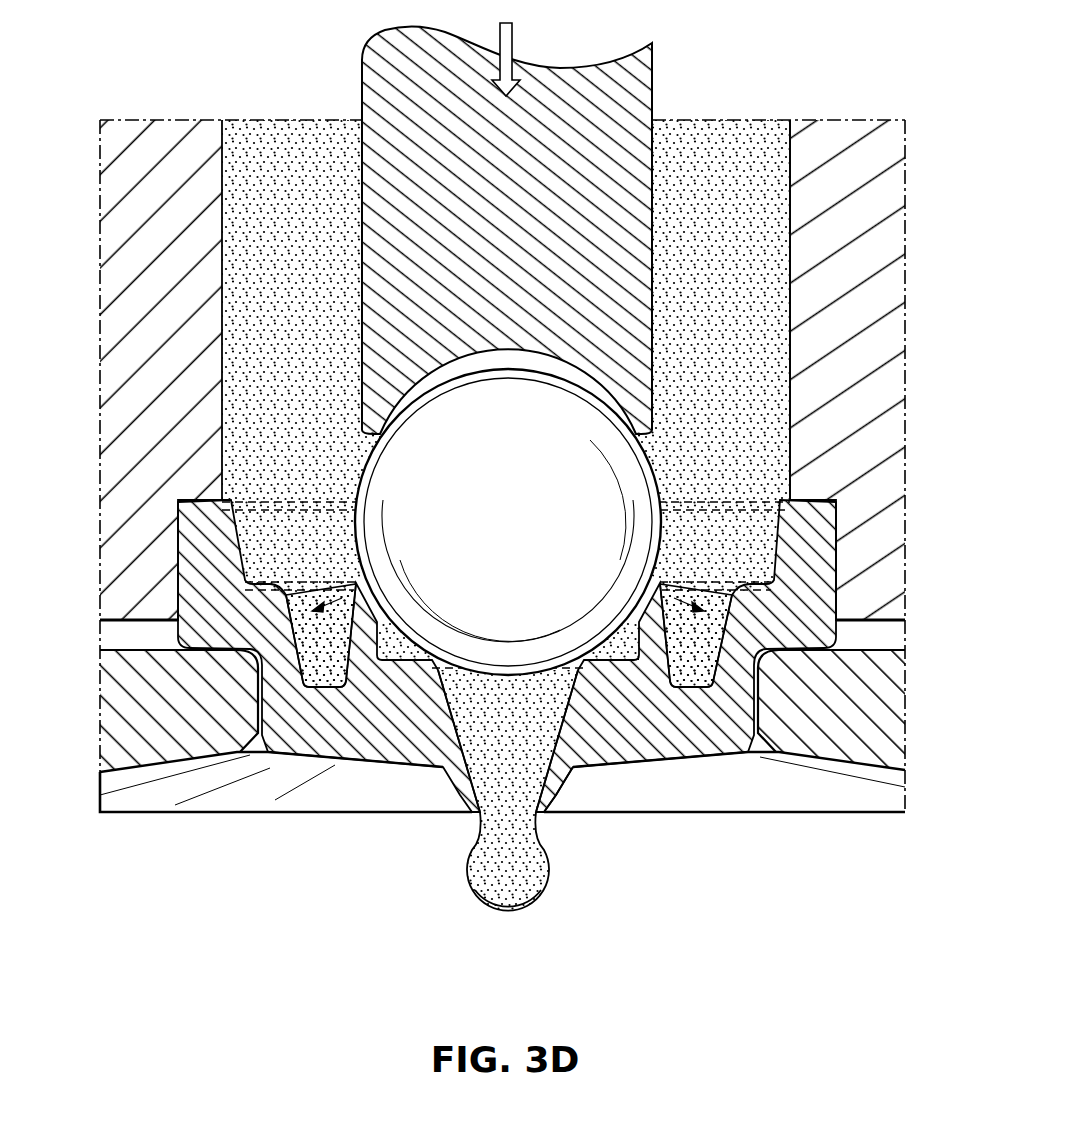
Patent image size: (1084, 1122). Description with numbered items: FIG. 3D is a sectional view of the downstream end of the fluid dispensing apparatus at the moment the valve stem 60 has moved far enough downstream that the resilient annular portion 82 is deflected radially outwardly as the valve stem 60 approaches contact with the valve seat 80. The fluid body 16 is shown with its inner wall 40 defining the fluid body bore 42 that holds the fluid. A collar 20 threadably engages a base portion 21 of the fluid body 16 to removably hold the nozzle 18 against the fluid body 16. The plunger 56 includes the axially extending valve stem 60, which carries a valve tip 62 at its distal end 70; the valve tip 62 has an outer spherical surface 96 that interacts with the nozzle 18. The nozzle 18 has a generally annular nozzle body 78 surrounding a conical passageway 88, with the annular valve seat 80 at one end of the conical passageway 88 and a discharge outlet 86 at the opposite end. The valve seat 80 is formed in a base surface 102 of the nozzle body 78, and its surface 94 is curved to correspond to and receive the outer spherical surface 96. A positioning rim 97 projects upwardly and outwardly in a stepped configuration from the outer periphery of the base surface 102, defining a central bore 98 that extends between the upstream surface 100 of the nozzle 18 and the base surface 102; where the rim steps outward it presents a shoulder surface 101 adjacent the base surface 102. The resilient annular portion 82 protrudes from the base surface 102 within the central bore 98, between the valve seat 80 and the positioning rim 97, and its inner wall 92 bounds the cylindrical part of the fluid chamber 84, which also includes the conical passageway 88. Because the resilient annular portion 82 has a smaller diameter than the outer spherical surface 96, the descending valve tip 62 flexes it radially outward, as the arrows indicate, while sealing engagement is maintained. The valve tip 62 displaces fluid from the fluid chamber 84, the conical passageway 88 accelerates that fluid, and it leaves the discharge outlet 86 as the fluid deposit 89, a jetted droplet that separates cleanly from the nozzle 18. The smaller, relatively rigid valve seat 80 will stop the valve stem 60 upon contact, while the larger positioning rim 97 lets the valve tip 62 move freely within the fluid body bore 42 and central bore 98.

The fluid body 16 is at (857, 116).
The nozzle 18 is at (385, 770).
The collar 20 is at (110, 710).
The base portion 21 is at (132, 597).
The inner wall 40 is at (790, 142).
The fluid body bore 42 is at (710, 401).
The plunger 56 is at (553, 64).
The valve stem 60 is at (652, 92).
The valve tip 62 is at (655, 477).
The distal end 70 is at (358, 152).
The nozzle body 78 is at (300, 754).
The annular valve seat 80 is at (438, 670).
The resilient annular portion 82 is at (652, 576).
The fluid chamber 84 is at (491, 714).
The discharge outlet 86 is at (471, 868).
The conical passageway 88 is at (560, 787).
The fluid deposit 89 is at (515, 908).
The inner wall 92 is at (376, 618).
The surface 94 is at (578, 670).
The outer spherical surface 96 is at (497, 512).
The positioning rim 97 is at (815, 571).
The central bore 98 is at (745, 522).
The upstream surface 100 is at (198, 500).
The shoulder surface 101 is at (840, 690).
The base surface 102 is at (692, 684).